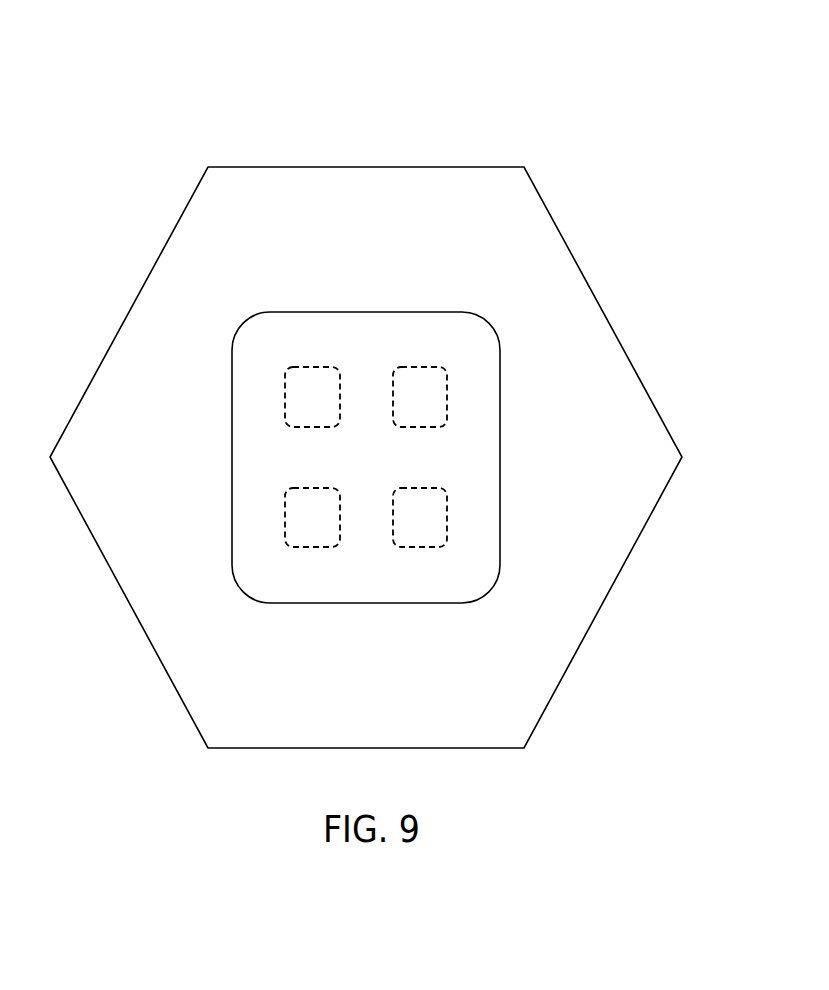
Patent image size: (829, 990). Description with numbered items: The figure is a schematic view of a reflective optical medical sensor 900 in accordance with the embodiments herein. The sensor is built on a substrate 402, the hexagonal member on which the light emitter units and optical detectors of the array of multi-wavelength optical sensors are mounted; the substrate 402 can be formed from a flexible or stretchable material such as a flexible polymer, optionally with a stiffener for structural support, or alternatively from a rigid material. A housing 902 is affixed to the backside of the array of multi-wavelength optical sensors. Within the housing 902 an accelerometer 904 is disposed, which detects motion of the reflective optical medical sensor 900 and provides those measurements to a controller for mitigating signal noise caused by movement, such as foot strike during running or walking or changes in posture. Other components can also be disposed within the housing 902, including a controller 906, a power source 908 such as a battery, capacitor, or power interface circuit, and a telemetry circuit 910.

The reflective optical medical sensor 900 is at (150, 95).
The substrate 402 is at (114, 337).
The housing 902 is at (410, 312).
The accelerometer 904 is at (438, 393).
The controller 906 is at (296, 388).
The power source 908 is at (298, 518).
The telemetry circuit 910 is at (435, 518).